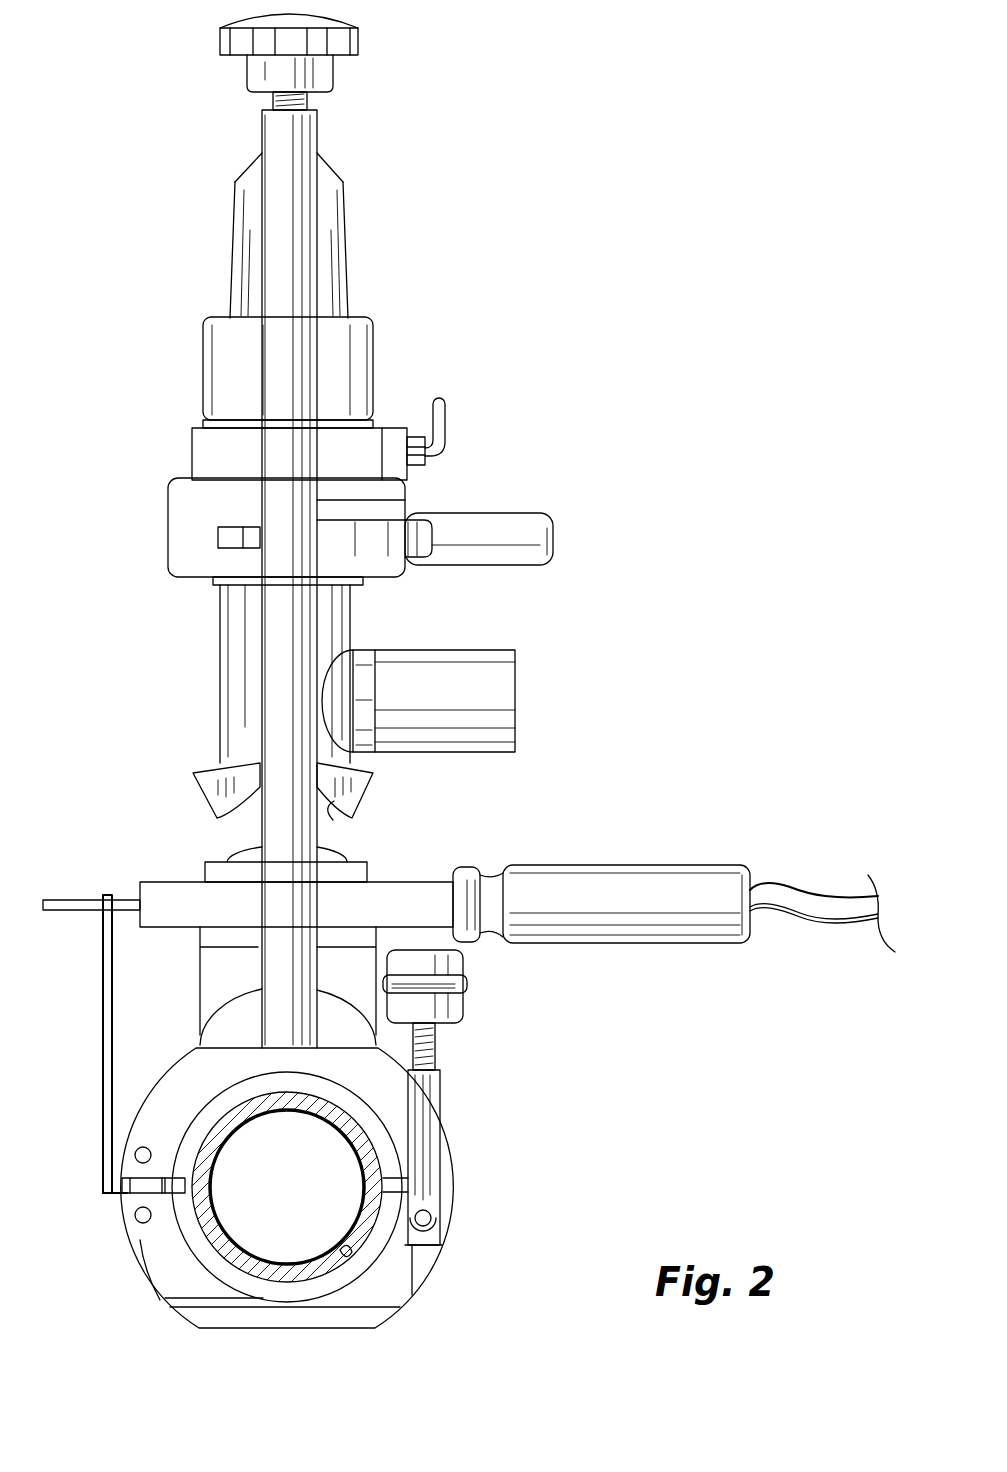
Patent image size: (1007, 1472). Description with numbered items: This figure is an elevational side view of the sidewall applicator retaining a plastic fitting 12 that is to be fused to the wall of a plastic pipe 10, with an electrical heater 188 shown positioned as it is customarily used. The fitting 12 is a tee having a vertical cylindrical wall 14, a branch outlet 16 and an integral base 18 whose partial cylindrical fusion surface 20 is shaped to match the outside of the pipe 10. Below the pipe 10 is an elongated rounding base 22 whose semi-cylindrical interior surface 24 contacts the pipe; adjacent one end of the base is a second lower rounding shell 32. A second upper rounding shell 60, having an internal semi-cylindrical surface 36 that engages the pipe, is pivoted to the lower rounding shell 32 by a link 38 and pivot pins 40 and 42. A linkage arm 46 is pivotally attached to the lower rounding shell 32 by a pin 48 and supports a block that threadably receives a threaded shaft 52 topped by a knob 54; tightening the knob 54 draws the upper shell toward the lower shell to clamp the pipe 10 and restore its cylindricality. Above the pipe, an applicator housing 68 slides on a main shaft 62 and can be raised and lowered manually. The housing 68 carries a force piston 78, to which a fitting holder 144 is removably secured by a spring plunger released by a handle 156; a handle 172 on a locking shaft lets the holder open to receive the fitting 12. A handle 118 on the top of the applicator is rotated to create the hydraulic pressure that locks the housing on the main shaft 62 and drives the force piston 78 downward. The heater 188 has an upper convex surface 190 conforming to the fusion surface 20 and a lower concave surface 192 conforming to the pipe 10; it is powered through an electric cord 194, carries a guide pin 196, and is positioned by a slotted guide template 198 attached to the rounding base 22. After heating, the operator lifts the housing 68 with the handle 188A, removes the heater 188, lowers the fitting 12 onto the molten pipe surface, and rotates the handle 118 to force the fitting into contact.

The plastic pipe 10 is at (405, 1186).
The plastic fitting 12 is at (192, 665).
The vertical cylindrical wall 14 is at (338, 627).
The branch outlet 16 is at (475, 651).
The integral base 18 is at (355, 791).
The fusion surface 20 is at (333, 820).
The rounding base 22 is at (205, 1252).
The semi-cylindrical interior surface 24 is at (362, 1255).
The second lower rounding shell 32 is at (160, 1243).
The internal semi-cylindrical surface 36 is at (368, 1130).
The link 38 is at (140, 1197).
The pivot pin 40 is at (138, 1220).
The pivot pin 42 is at (135, 1155).
The linkage arm 46 is at (430, 1090).
The pin 48 is at (432, 1222).
The threaded shaft 52 is at (437, 1050).
The knob 54 is at (430, 983).
The second upper rounding shell 60 is at (150, 1117).
The main shaft 62 is at (288, 195).
The applicator housing 68 is at (355, 365).
The force piston 78 is at (232, 428).
The handle 118 is at (358, 40).
The fitting holder 144 is at (478, 472).
The handle 156 is at (446, 412).
The handle 172 is at (530, 538).
The electrical heater 188 is at (488, 829).
The handle 188A is at (665, 885).
The upper convex surface 190 is at (242, 847).
The lower concave surface 192 is at (228, 1018).
The electric cord 194 is at (800, 898).
The guide pin 196 is at (75, 898).
The guide template 198 is at (107, 1048).